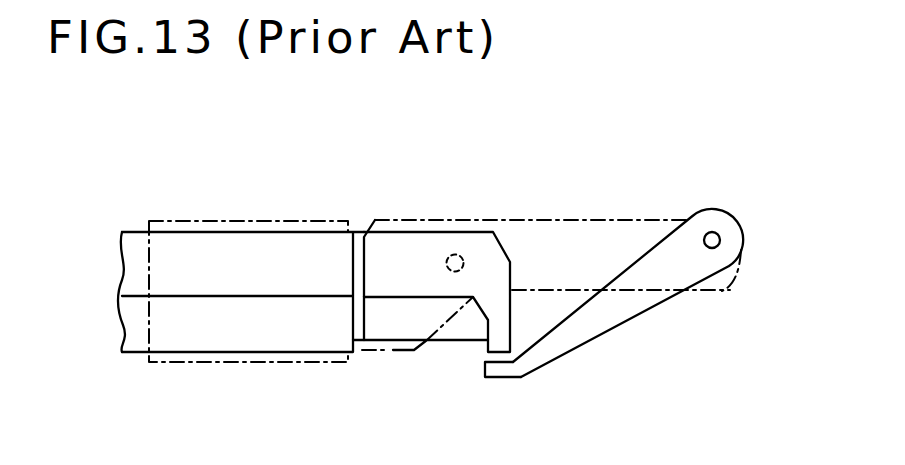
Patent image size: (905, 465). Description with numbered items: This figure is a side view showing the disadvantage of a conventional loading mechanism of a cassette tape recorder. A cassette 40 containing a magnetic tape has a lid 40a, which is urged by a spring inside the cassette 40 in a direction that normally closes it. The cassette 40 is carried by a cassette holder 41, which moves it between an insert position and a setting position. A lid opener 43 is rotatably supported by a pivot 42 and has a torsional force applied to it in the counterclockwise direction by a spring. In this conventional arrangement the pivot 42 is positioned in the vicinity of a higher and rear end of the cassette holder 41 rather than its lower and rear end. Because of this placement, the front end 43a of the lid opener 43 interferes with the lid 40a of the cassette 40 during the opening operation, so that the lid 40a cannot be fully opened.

The cassette 40 is at (389, 326).
The lid 40a is at (432, 240).
The cassette holder 41 is at (568, 230).
The pivot 42 is at (713, 238).
The lid opener 43 is at (632, 305).
The front end 43a is at (502, 367).